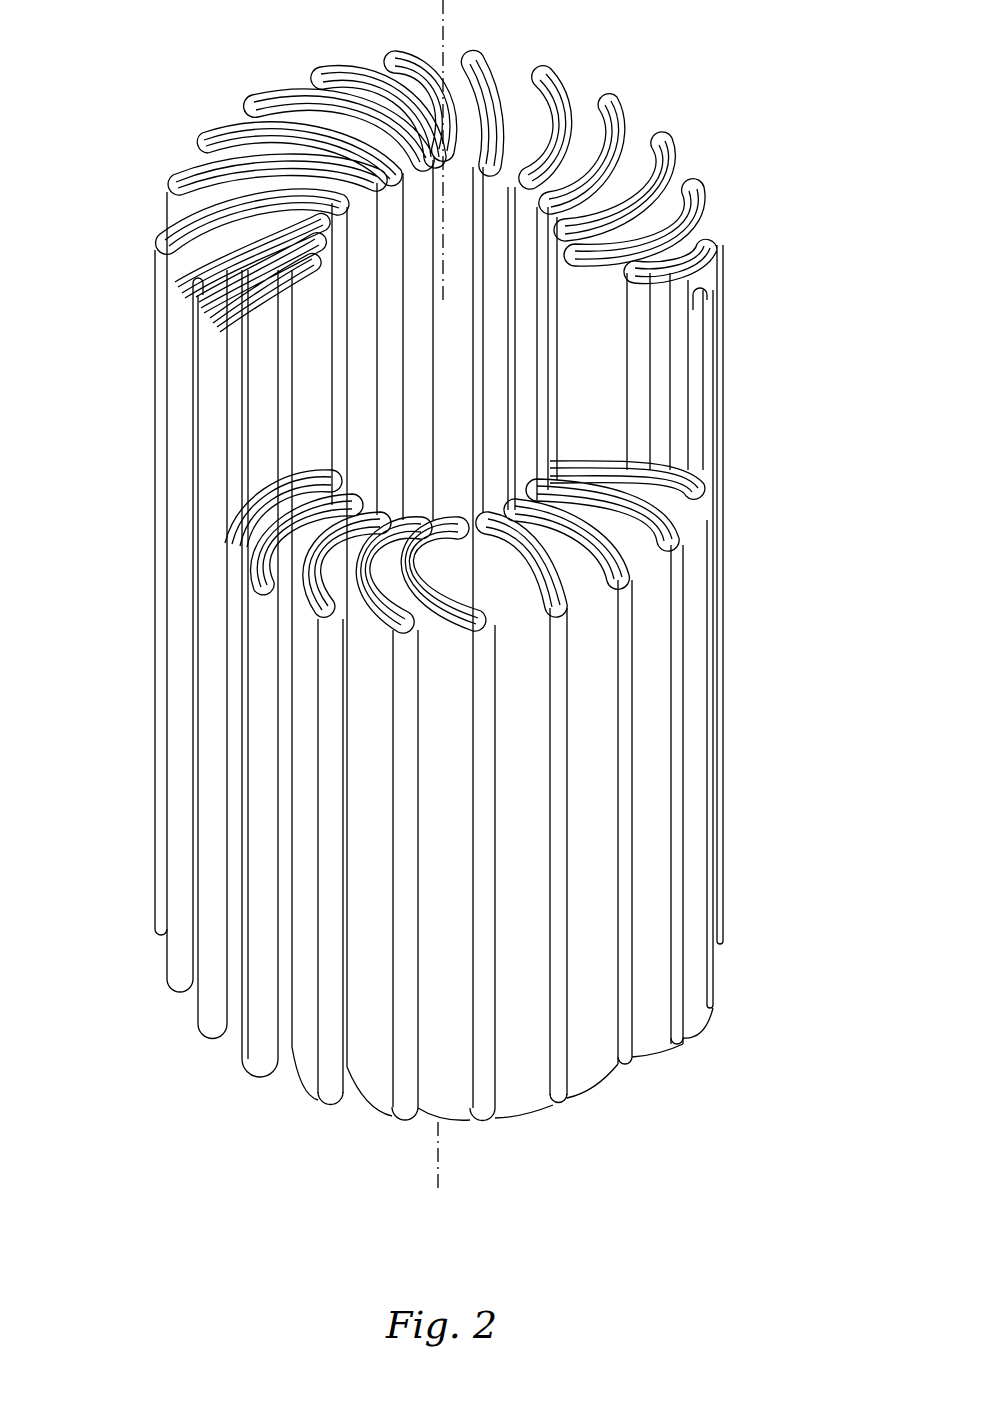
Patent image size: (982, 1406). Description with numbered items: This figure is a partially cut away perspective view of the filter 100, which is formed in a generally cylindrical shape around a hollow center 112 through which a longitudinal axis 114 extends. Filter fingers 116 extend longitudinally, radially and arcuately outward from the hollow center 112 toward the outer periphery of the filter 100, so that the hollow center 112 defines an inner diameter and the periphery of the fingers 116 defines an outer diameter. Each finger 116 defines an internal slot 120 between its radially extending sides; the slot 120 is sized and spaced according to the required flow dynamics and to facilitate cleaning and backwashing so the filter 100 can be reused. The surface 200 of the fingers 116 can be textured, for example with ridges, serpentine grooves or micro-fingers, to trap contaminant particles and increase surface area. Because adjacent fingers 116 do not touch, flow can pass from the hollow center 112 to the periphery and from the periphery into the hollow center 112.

The filter 100 is at (621, 68).
The hollow center 112 is at (390, 212).
The longitudinal axis 114 is at (449, 38).
The filter fingers 116 is at (717, 265).
The internal slot 120 is at (165, 240).
The surface 200 is at (586, 357).